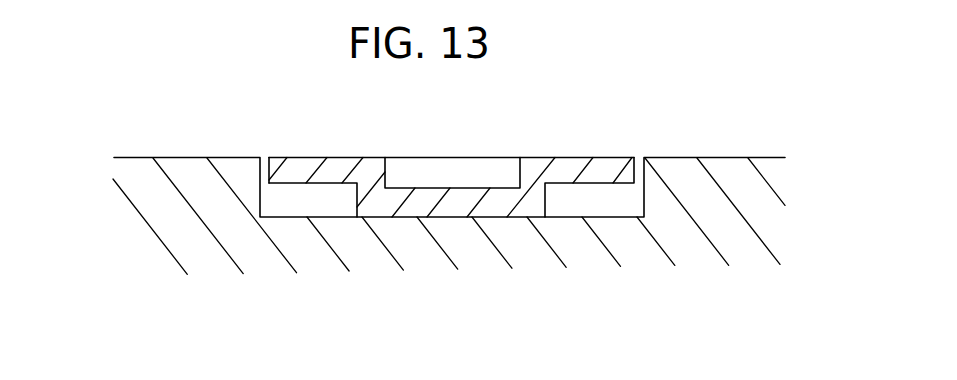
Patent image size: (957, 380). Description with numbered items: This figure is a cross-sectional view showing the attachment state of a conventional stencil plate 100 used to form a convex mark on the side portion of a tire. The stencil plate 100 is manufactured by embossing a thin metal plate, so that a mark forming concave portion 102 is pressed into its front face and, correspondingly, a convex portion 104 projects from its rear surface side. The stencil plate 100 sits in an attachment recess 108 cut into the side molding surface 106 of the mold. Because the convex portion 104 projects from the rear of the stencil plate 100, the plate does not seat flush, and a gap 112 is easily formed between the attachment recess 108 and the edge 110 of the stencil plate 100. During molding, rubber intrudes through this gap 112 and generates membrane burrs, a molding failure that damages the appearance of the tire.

The stencil plate 100 is at (554, 138).
The mark forming concave portion 102 is at (397, 163).
The convex portion 104 is at (448, 216).
The side molding surface 106 is at (710, 157).
The attachment recess 108 is at (281, 211).
The edge 110 is at (281, 157).
The gap 112 is at (263, 157).